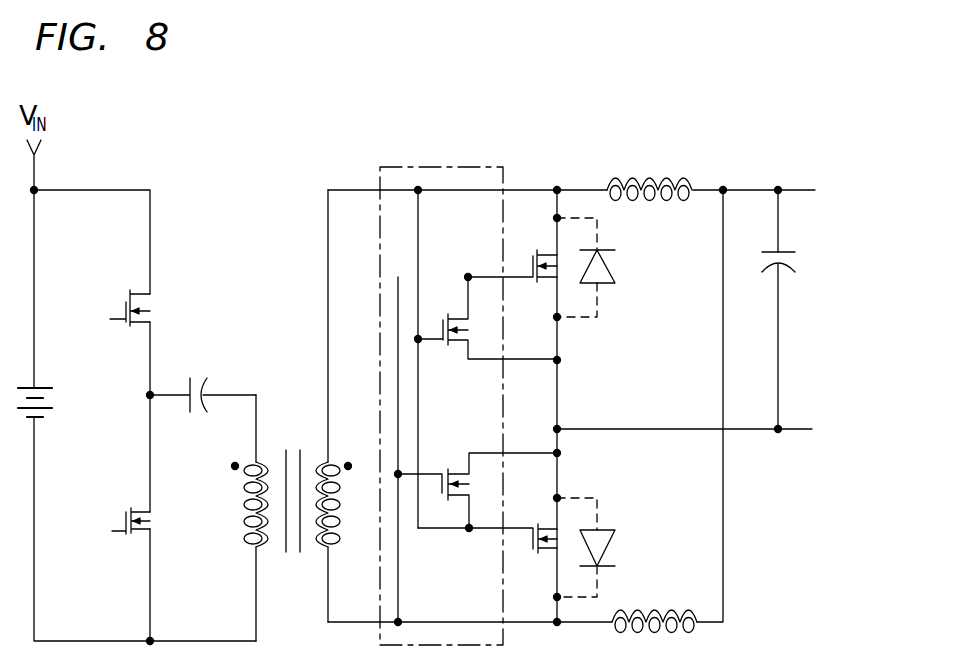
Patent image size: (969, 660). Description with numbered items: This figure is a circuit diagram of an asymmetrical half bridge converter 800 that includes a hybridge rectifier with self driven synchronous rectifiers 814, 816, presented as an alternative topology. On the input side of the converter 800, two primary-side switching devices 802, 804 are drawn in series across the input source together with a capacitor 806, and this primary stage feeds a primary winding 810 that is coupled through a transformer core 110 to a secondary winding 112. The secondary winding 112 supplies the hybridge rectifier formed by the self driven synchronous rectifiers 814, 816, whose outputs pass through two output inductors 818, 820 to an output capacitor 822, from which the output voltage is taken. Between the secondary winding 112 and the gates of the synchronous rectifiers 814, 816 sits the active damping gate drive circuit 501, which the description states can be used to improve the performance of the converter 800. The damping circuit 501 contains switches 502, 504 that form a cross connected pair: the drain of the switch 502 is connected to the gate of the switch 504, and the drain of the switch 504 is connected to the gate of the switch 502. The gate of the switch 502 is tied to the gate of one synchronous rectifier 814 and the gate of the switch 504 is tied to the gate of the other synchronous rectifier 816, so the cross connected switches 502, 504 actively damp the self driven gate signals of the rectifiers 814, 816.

The asymmetrical half bridge converter 800 is at (546, 117).
The primary switch transistor (duty D) 802 is at (127, 293).
The primary switch transistor (duty 1-D1) 804 is at (128, 511).
The capacitor 806 is at (196, 376).
The transformer primary winding 810 is at (247, 546).
The transformer core 110 is at (290, 441).
The transformer secondary winding 112 is at (337, 546).
The active damping gate drive circuit 501 is at (410, 162).
The switch 502 is at (445, 345).
The switch 504 is at (442, 471).
The self driven synchronous rectifier 814 is at (535, 252).
The self driven synchronous rectifier 816 is at (532, 553).
The output inductor 818 is at (637, 178).
The output inductor 820 is at (665, 611).
The output capacitor 822 is at (797, 259).